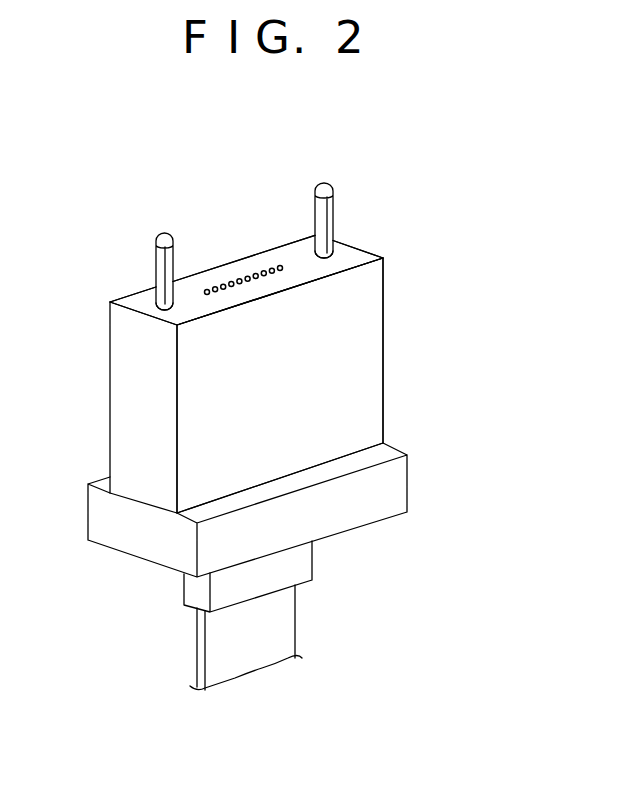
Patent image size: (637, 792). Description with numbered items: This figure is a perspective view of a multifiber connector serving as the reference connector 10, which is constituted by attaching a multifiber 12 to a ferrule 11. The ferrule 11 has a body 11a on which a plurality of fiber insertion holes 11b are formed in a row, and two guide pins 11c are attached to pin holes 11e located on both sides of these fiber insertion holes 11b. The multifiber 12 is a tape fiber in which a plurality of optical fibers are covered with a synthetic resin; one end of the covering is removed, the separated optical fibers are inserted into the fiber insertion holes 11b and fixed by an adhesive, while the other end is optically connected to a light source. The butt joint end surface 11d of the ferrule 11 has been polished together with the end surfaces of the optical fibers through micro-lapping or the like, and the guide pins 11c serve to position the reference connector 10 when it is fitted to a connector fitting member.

The reference connector 10 is at (243, 215).
The ferrule 11 is at (388, 300).
The body 11a is at (360, 360).
The fiber insertion holes 11b is at (263, 274).
The guide pins 11c is at (160, 272).
The butt joint end surface 11d is at (350, 257).
The pin holes 11e is at (153, 303).
The multifiber 12 is at (275, 622).